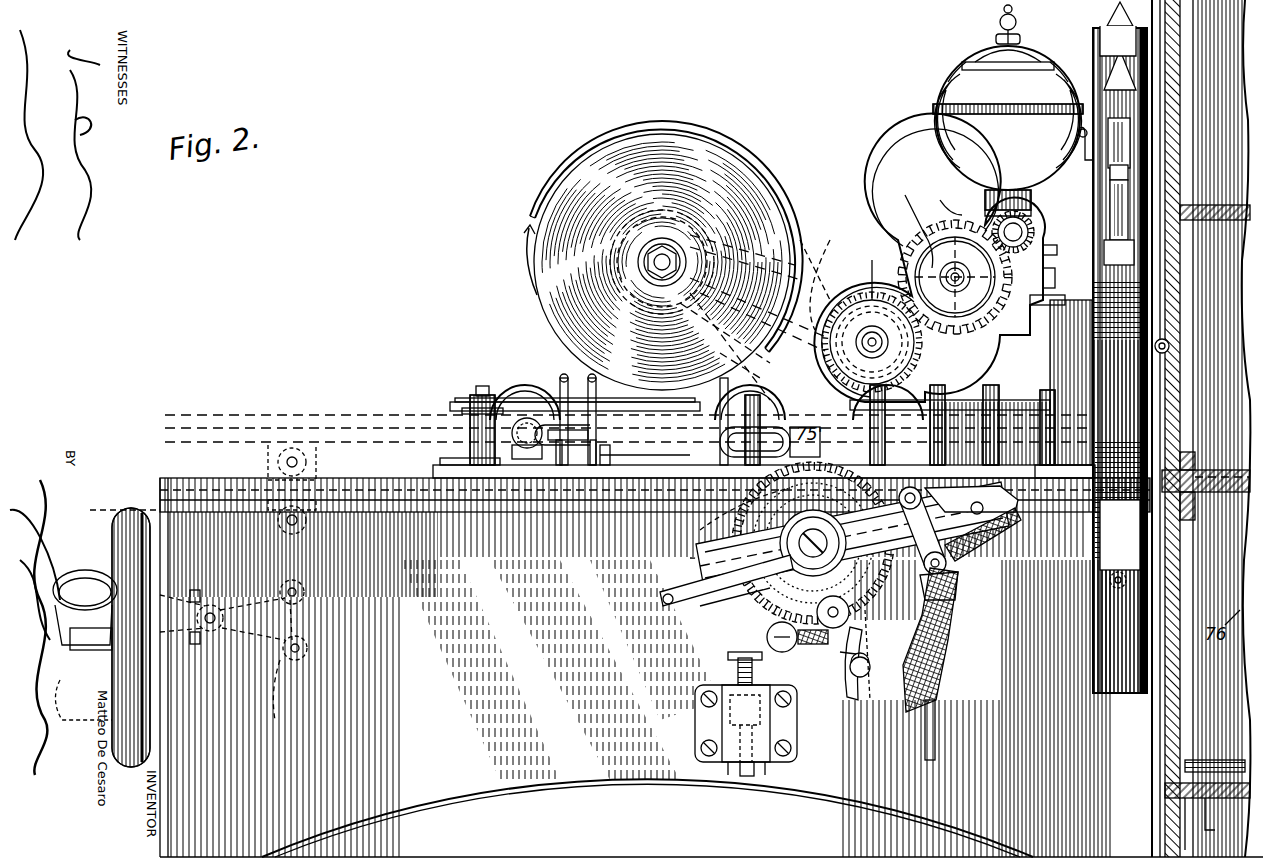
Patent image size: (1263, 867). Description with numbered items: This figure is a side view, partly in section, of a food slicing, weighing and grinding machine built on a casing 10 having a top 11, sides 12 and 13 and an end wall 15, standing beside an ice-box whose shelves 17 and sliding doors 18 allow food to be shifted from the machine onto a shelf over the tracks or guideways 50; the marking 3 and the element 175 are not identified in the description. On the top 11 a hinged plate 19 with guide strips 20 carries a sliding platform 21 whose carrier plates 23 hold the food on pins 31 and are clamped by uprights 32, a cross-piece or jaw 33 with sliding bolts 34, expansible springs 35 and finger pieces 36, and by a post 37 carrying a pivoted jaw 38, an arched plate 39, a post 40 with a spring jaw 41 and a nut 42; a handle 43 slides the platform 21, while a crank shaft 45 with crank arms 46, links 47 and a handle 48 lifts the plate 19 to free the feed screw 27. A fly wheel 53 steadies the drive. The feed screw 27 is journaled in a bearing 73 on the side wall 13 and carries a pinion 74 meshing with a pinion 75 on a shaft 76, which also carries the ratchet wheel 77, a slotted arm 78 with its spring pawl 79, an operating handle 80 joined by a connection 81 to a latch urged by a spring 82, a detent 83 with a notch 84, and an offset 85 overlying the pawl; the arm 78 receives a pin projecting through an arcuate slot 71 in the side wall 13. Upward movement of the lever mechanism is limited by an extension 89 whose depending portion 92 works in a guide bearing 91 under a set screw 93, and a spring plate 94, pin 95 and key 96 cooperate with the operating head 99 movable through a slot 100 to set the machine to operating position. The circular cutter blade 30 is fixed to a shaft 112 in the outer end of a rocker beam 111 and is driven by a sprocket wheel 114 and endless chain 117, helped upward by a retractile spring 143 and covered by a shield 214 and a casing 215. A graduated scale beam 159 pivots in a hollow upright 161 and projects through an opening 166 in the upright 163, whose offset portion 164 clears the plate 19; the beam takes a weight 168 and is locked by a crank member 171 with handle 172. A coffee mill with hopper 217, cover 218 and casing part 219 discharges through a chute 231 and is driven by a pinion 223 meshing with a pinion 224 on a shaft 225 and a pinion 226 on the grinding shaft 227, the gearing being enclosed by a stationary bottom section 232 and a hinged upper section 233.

The section line 3 is at (116, 510).
The casing 10 is at (655, 778).
The top 11 is at (455, 497).
The side 12 is at (1050, 478).
The side wall 13 is at (640, 684).
The end wall 15 is at (1207, 805).
The shelves 17 is at (1230, 222).
The sliding doors 18 is at (1170, 348).
The plate 19 is at (335, 478).
The guide strips 20 is at (212, 500).
The platform 21 is at (458, 460).
The carrier plates 23 is at (606, 467).
The feed screw 27 is at (1225, 506).
The cutting knife 30 is at (540, 267).
The pins 31 is at (615, 467).
The uprights 32 is at (720, 400).
The cross-piece or jaw 33 is at (545, 400).
The sliding bolts 34 is at (590, 430).
The expansible springs 35 is at (720, 441).
The finger pieces 36 is at (735, 395).
The post 37 is at (468, 420).
The jaw 38 is at (566, 385).
The slotted and arched plate 39 is at (520, 388).
The post 40 is at (592, 465).
The spring jaw 41 is at (558, 465).
The nut 42 is at (478, 388).
The handle 43 is at (520, 446).
The crank shaft 45 is at (215, 632).
The crank arms 46 is at (298, 668).
The links 47 is at (305, 608).
The handle 48 is at (100, 575).
The tracks or guideways 50 is at (1206, 468).
The fly wheel 53 is at (152, 742).
The arcuate slot 71 is at (925, 695).
The bearing 73 is at (790, 500).
The pinion 74 is at (730, 515).
The pinion 75 is at (745, 552).
The shaft 76 is at (780, 548).
The ratchet wheel 77 is at (726, 580).
The slotted arm 78 is at (733, 602).
The spring pawl 79 is at (958, 592).
The operating handle 80 is at (833, 612).
The connection 81 is at (880, 556).
The spring 82 is at (946, 568).
The detent 83 is at (990, 520).
The notch 84 is at (995, 545).
The offset 85 is at (958, 496).
The extension 89 is at (722, 712).
The guide bearing 91 is at (698, 700).
The depending portion 92 is at (745, 777).
The set screw 93 is at (728, 655).
The spring plate 94 is at (858, 678).
The pin 95 is at (912, 655).
The key 96 is at (895, 700).
The operating head 99 is at (768, 636).
The slot 100 is at (852, 660).
The rocker beam 111 is at (815, 290).
The shaft 112 is at (671, 258).
The sprocket wheel or pulley 114 is at (618, 272).
The endless chain 117 is at (783, 222).
The retractile spring 143 is at (1120, 560).
The scale beam 159 is at (1125, 200).
The hollow upright 161 is at (1093, 35).
The upright 163 is at (1118, 69).
The offset portion 164 is at (1120, 516).
The opening 166 is at (1130, 140).
The weight 168 is at (1120, 310).
The crank member 171 is at (1110, 175).
The crank portion or handle 172 is at (1088, 155).
The gear 175 is at (872, 300).
The shield 214 is at (528, 216).
The casing 215 is at (825, 300).
The hopper 217 is at (950, 140).
The removable cover 218 is at (962, 80).
The casing part 219 is at (937, 194).
The pinion 223 is at (872, 326).
The pinion 224 is at (957, 240).
The shaft 225 is at (955, 275).
The pinion 226 is at (1050, 248).
The shaft 227 is at (1050, 275).
The chute or spout 231 is at (775, 268).
The bottom section 232 is at (990, 320).
The upper section 233 is at (903, 221).